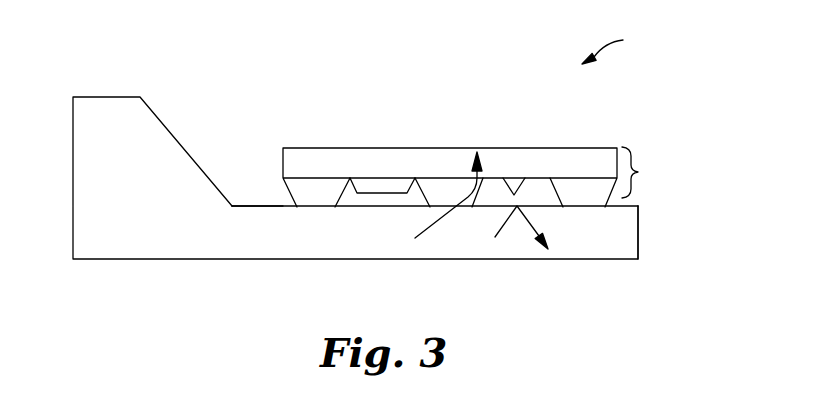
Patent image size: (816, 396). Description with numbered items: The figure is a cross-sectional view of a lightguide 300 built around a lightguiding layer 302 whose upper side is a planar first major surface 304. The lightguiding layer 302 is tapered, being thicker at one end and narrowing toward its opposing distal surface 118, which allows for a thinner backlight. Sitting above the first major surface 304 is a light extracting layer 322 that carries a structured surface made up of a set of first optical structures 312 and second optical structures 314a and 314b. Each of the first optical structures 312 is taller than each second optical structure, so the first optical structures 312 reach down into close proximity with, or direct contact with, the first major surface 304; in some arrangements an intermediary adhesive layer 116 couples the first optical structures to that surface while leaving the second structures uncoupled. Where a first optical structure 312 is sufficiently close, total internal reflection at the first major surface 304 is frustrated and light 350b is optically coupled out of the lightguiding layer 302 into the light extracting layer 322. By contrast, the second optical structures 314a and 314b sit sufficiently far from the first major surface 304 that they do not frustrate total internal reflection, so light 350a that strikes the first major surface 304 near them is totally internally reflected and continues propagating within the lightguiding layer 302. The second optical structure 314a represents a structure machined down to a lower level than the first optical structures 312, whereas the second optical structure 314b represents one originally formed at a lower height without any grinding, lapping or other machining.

The lightguide 300 is at (627, 46).
The lightguiding layer 302 is at (150, 242).
The first major surface 304 is at (253, 204).
The adhesive layer 116 is at (315, 200).
The distal surface 118 is at (639, 243).
The light extracting layer 322 is at (483, 177).
The first optical structures 312 is at (458, 184).
The second optical structure 314a is at (368, 185).
The second optical structure 314b is at (513, 183).
The light 350a is at (527, 227).
The light 350b is at (445, 213).